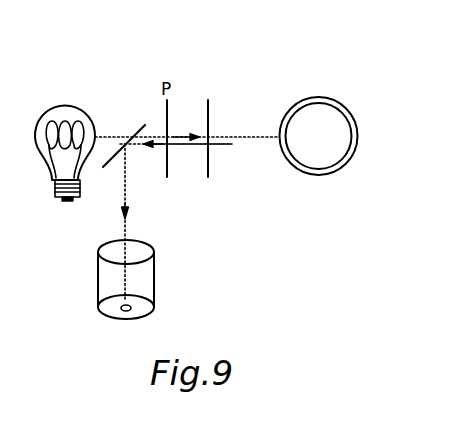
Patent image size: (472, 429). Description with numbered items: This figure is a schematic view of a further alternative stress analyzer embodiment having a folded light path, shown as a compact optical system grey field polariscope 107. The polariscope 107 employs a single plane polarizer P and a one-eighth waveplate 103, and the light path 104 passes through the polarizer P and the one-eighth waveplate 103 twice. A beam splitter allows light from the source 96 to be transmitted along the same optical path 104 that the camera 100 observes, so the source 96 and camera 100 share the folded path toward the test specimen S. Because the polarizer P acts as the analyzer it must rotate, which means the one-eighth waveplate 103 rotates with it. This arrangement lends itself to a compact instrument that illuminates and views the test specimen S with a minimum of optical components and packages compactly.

The source 96 is at (50, 110).
The one-eighth waveplate 103 is at (210, 120).
The light path 104 is at (232, 144).
The sample S is at (344, 108).
The camera 100 is at (154, 293).
The compact optical system grey field polariscope 107 is at (262, 252).